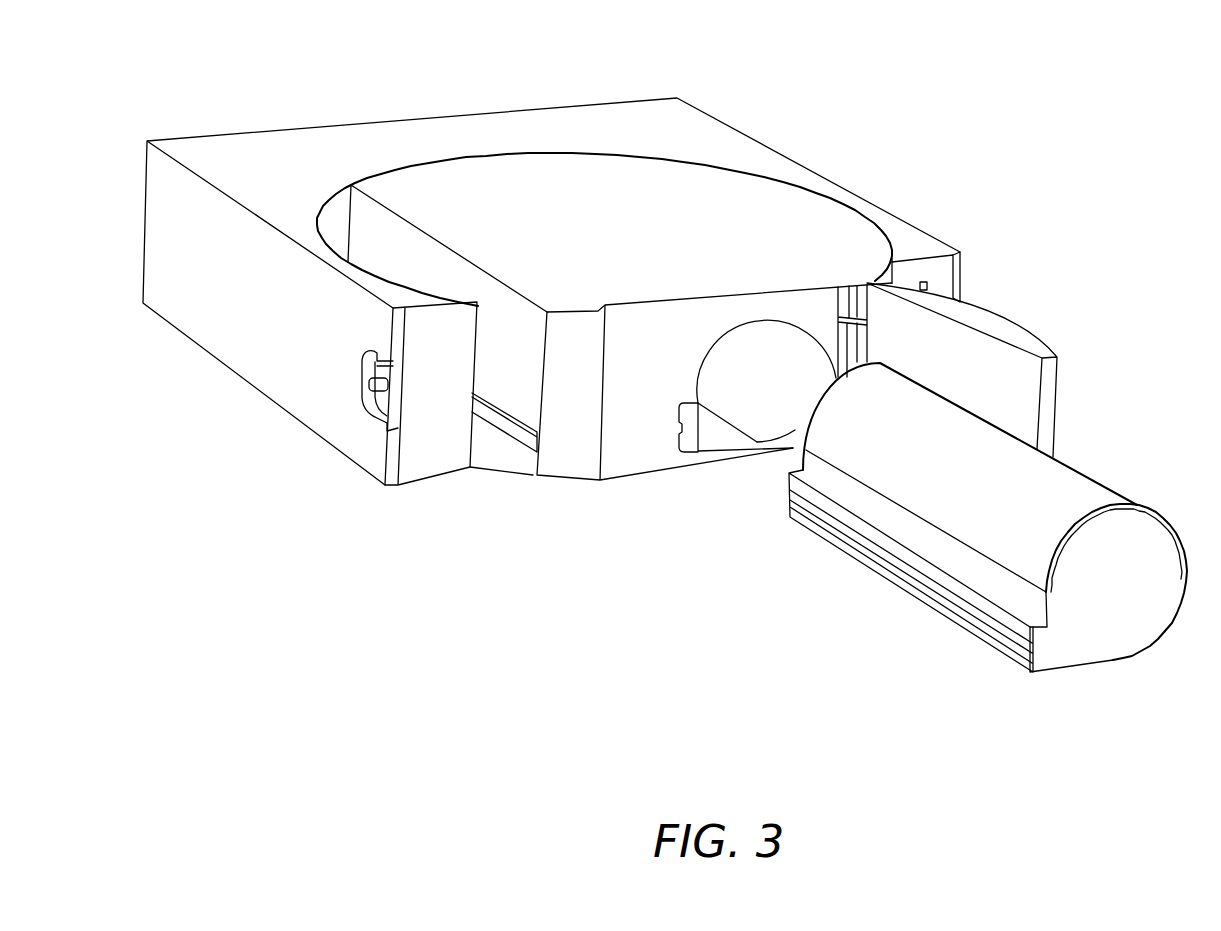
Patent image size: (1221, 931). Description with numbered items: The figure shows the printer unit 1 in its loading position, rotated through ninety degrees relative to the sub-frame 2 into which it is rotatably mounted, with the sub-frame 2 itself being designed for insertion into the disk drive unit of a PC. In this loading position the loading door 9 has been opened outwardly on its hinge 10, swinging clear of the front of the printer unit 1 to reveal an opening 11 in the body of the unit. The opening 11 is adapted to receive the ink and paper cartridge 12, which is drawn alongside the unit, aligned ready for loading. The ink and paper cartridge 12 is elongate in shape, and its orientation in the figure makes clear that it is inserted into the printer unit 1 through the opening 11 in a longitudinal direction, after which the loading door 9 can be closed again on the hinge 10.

The printer unit 1 is at (803, 217).
The sub-frame 2 is at (650, 112).
The loading door 9 is at (1047, 400).
The hinge 10 is at (845, 347).
The opening 11 is at (742, 402).
The ink and paper cartridge 12 is at (1070, 497).